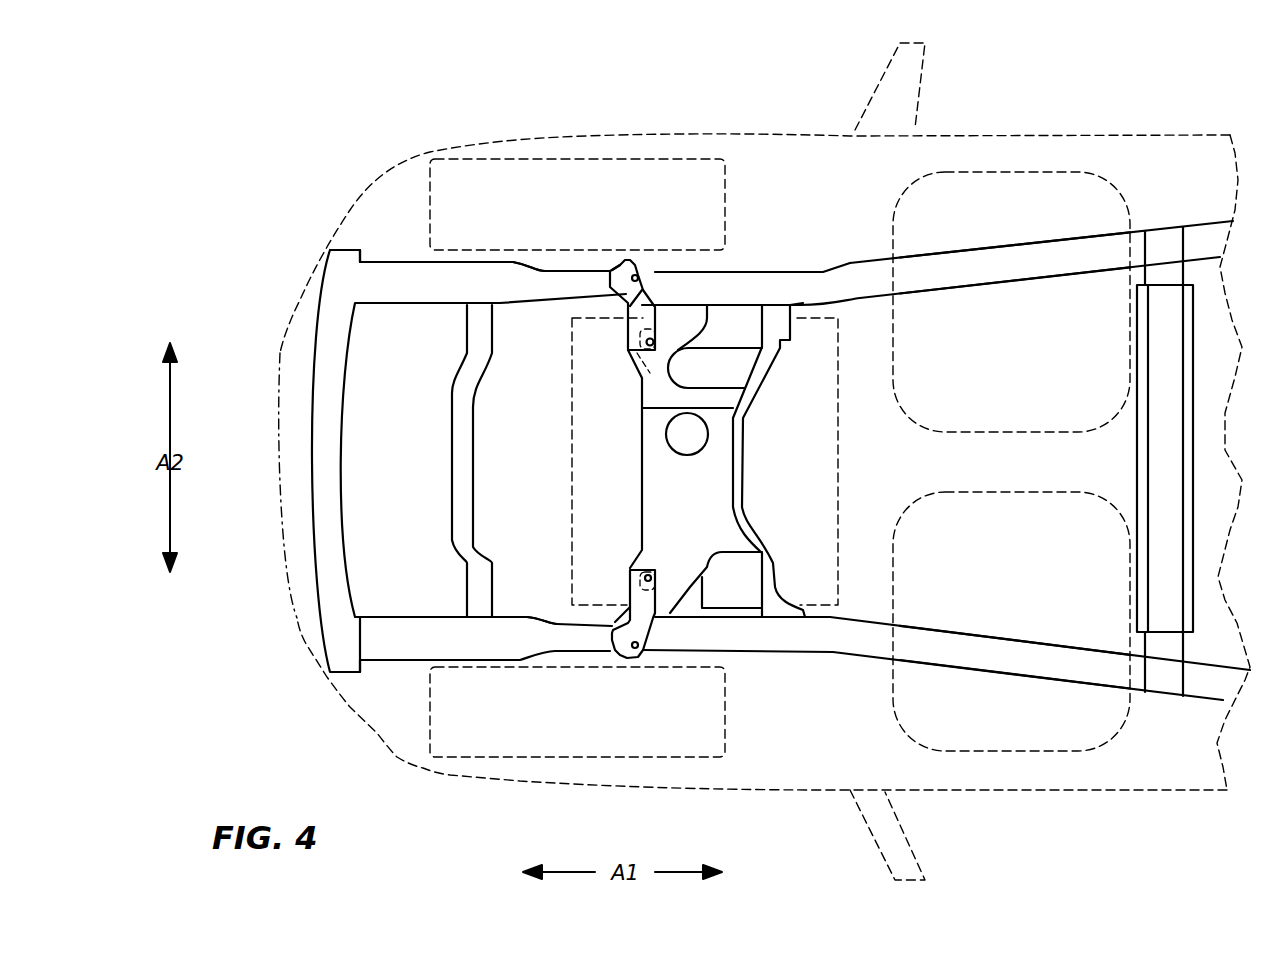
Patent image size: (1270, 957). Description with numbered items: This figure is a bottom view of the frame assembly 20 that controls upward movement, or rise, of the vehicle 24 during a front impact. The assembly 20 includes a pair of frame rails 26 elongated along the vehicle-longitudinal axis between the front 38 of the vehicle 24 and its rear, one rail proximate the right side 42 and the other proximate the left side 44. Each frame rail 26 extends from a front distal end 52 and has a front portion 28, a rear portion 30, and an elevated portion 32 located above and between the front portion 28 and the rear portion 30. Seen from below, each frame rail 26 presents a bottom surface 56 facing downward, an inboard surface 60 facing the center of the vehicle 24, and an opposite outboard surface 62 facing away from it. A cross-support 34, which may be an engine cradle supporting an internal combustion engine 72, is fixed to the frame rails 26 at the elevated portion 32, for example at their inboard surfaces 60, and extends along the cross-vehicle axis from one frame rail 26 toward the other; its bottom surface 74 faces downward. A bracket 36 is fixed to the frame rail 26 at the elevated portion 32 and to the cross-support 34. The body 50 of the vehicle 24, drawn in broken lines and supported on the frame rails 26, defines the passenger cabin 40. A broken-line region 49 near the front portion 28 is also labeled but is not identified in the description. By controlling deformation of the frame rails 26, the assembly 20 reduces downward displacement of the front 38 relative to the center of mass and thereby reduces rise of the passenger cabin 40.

The assembly 20 is at (622, 228).
The vehicle 24 is at (1190, 135).
The frame rails 26 is at (933, 273).
The front portion 28 is at (457, 283).
The rear portion 30 is at (900, 284).
The elevated portion 32 is at (670, 282).
The cross-support 34 is at (318, 290).
The bracket 36 is at (630, 318).
The front 38 is at (295, 622).
The passenger cabin 40 is at (957, 218).
The right side 42 is at (1190, 790).
The left side 44 is at (1050, 130).
The front region 49 is at (520, 182).
The body 50 is at (1048, 790).
The front distal end 52 is at (357, 272).
The bottom surface 56 is at (587, 282).
The inboard surface 60 is at (1107, 272).
The outboard surface 62 is at (858, 262).
The internal combustion engine 72 is at (845, 478).
The bottom surface 74 is at (690, 340).